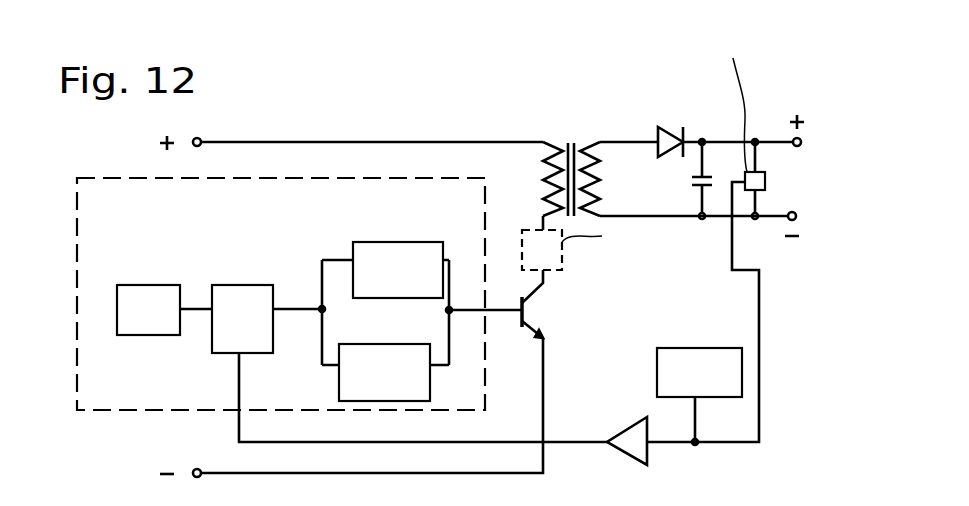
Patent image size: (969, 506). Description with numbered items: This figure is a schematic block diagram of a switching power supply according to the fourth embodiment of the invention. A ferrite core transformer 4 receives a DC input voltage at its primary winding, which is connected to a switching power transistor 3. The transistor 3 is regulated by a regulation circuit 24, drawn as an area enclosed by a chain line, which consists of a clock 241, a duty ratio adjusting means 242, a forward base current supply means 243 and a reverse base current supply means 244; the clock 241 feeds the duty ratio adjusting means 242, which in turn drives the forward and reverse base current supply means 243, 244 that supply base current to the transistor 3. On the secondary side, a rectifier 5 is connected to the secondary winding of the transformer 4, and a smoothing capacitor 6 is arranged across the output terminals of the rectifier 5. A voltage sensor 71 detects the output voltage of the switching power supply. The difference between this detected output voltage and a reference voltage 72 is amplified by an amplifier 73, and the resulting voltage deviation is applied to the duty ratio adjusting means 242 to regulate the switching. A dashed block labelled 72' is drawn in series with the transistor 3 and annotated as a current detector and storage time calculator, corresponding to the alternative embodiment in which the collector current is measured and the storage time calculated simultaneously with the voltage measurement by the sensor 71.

The regulation circuit 24 is at (102, 398).
The clock 241 is at (150, 283).
The duty ratio adjusting means 242 is at (240, 283).
The forward base current supply means 243 is at (393, 241).
The reverse base current supply means 244 is at (382, 344).
The switching power transistor 3 is at (548, 313).
The current detector and storage time calculator 72' is at (617, 254).
The ferrite core transformer 4 is at (573, 133).
The rectifier 5 is at (672, 126).
The smoothing capacitor 6 is at (688, 178).
The voltage sensor 71 is at (768, 184).
The reference voltage 72 is at (699, 349).
The amplifier 73 is at (625, 420).